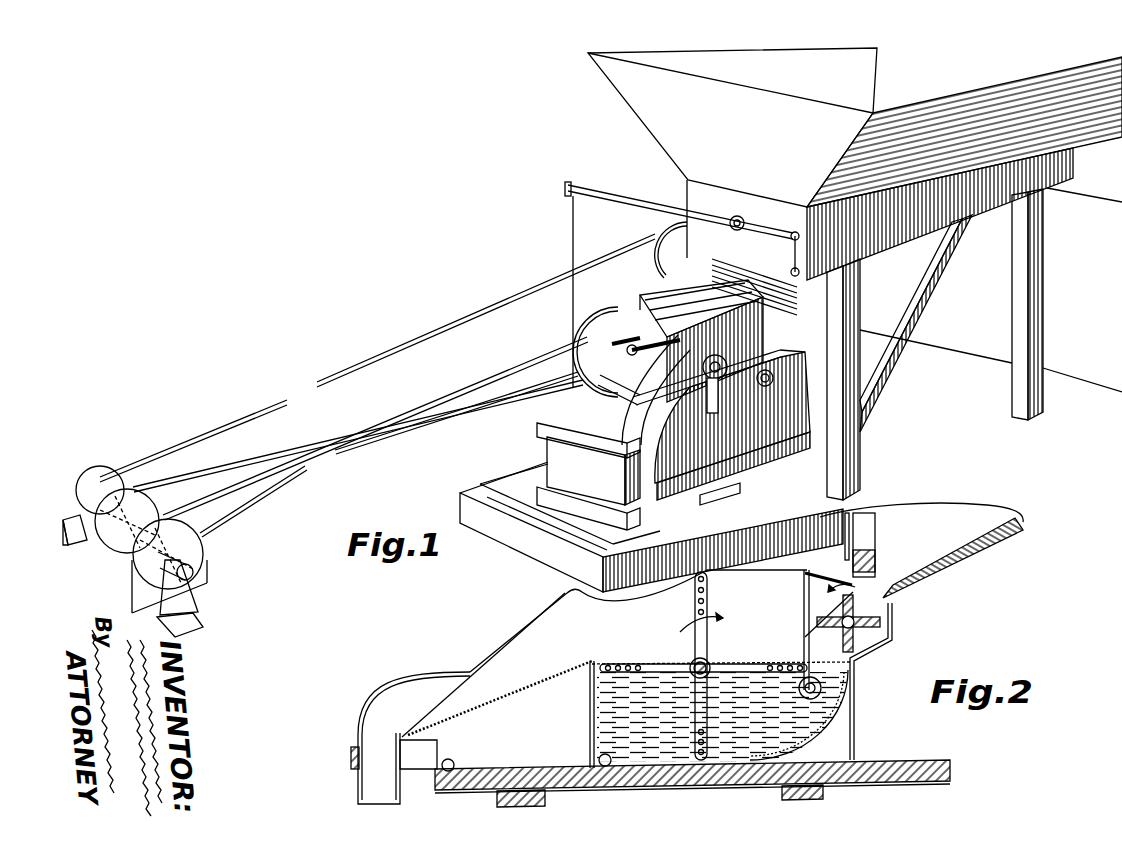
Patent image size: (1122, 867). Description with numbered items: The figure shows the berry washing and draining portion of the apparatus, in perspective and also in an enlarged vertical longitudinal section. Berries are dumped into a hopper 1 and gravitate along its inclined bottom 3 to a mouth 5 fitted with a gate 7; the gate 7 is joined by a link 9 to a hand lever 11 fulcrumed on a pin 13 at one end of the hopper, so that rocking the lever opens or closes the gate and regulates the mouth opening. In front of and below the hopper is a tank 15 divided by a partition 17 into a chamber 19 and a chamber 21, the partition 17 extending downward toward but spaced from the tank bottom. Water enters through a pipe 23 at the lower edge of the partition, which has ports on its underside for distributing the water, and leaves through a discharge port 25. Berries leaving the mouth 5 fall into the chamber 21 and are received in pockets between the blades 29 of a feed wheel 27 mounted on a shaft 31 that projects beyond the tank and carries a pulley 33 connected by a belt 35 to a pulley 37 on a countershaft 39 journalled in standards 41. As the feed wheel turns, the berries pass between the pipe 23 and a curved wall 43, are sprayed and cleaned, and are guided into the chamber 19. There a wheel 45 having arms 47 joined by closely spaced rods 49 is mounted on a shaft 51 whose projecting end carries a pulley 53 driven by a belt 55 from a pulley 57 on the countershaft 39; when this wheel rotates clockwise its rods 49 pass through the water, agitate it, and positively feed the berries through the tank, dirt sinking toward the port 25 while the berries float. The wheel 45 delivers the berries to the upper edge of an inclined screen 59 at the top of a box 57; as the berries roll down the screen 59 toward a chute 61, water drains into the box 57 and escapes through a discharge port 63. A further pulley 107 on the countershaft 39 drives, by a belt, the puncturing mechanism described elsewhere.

In FIG. 1, the hopper 1 is at (650, 122).
In FIG. 2, the hopper 1 is at (967, 508).
In FIG. 1, the inclined bottom 3 is at (893, 247).
In FIG. 2, the inclined bottom 3 is at (997, 553).
In FIG. 2, the mouth 5 is at (893, 592).
In FIG. 2, the gate 7 is at (875, 545).
In FIG. 1, the link 9 is at (792, 251).
In FIG. 2, the link 9 is at (845, 545).
In FIG. 1, the hand lever 11 is at (612, 200).
In FIG. 1, the pin 13 is at (735, 216).
In FIG. 1, the tank 15 is at (612, 482).
In FIG. 2, the tank 15 is at (760, 576).
In FIG. 1, the partition 17 is at (656, 290).
In FIG. 2, the partition 17 is at (804, 608).
In FIG. 2, the chamber 19 is at (684, 626).
In FIG. 2, the chamber 21 is at (870, 642).
In FIG. 2, the pipe 23 is at (855, 680).
In FIG. 2, the discharge port 25 is at (610, 765).
In FIG. 1, the feed wheel 27 is at (714, 258).
In FIG. 2, the feed wheel 27 is at (870, 631).
In FIG. 2, the blades 29 is at (843, 633).
In FIG. 2, the shaft 31 is at (888, 623).
In FIG. 1, the pulley 33 is at (660, 262).
In FIG. 1, the belt 35 is at (396, 350).
In FIG. 1, the pulley 37 is at (113, 475).
In FIG. 1, the countershaft 39 is at (113, 537).
In FIG. 1, the standards 41 is at (72, 540).
In FIG. 2, the curved wall 43 is at (828, 722).
In FIG. 1, the wheel 45 is at (621, 332).
In FIG. 2, the wheel 45 is at (708, 640).
In FIG. 2, the arms 47 is at (620, 663).
In FIG. 1, the rods 49 is at (700, 314).
In FIG. 2, the rods 49 is at (706, 579).
In FIG. 1, the shaft 51 is at (652, 343).
In FIG. 2, the shaft 51 is at (692, 662).
In FIG. 1, the pulley 53 is at (578, 345).
In FIG. 1, the belt 55 is at (292, 470).
In FIG. 1, the pulley / box 57 is at (167, 510).
In FIG. 2, the pulley / box 57 is at (518, 722).
In FIG. 1, the inclined screen 59 is at (598, 378).
In FIG. 2, the inclined screen 59 is at (493, 695).
In FIG. 1, the chute 61 is at (540, 455).
In FIG. 2, the chute 61 is at (373, 735).
In FIG. 2, the discharge port 63 is at (453, 764).
In FIG. 1, the pulley 107 is at (192, 545).